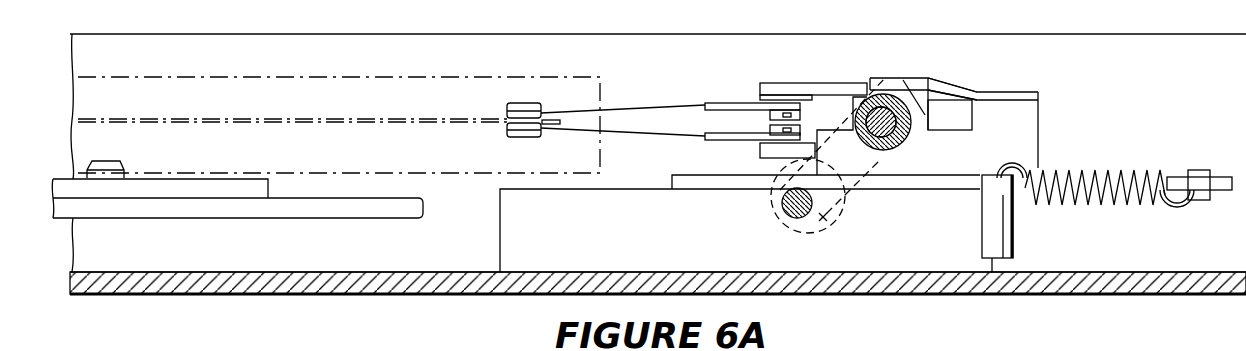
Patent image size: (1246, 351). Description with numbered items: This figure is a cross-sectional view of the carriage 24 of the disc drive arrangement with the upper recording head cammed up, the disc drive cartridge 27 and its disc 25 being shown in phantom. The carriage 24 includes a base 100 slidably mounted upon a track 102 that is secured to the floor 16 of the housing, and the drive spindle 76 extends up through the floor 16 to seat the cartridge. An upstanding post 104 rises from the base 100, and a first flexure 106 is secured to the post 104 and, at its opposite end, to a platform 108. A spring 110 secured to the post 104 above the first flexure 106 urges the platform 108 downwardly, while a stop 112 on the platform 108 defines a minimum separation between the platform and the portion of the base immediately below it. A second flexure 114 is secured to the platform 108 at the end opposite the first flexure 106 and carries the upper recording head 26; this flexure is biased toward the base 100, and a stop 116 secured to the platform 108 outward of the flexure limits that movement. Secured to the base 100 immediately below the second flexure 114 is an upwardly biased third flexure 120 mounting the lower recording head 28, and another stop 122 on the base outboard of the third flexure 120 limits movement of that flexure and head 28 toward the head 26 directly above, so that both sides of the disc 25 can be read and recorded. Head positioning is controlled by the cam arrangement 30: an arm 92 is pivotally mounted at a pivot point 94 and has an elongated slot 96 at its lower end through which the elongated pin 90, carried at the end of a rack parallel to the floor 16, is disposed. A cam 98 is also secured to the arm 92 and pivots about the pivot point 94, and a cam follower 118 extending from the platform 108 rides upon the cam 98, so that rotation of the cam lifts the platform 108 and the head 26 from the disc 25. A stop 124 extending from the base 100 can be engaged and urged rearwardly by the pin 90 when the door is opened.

The floor 16 is at (420, 271).
The carriage 24 is at (919, 66).
The disc 25 is at (397, 118).
The upper recording head 26 is at (527, 104).
The disc drive cartridge 27 is at (318, 77).
The lower recording head 28 is at (520, 137).
The cam arrangement 30 is at (877, 66).
The drive spindle 76 is at (120, 166).
The elongated pin 90 is at (782, 208).
The arm 92 is at (858, 180).
The pivot point 94 is at (880, 130).
The elongated slot 96 is at (814, 204).
The cam 98 is at (915, 138).
The base 100 is at (1040, 146).
The track 102 is at (640, 189).
The upstanding post 104 is at (1036, 125).
The first flexure 106 is at (972, 105).
The platform 108 is at (866, 84).
The spring 110 is at (940, 97).
The stop 112 is at (950, 90).
The second flexure 114 is at (648, 105).
The stop 116 is at (740, 106).
The cam follower 118 is at (890, 95).
The third flexure 120 is at (672, 138).
The stop 122 is at (748, 138).
The stop 124 is at (1014, 247).